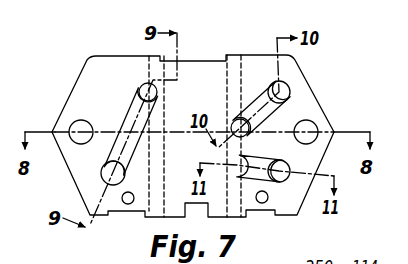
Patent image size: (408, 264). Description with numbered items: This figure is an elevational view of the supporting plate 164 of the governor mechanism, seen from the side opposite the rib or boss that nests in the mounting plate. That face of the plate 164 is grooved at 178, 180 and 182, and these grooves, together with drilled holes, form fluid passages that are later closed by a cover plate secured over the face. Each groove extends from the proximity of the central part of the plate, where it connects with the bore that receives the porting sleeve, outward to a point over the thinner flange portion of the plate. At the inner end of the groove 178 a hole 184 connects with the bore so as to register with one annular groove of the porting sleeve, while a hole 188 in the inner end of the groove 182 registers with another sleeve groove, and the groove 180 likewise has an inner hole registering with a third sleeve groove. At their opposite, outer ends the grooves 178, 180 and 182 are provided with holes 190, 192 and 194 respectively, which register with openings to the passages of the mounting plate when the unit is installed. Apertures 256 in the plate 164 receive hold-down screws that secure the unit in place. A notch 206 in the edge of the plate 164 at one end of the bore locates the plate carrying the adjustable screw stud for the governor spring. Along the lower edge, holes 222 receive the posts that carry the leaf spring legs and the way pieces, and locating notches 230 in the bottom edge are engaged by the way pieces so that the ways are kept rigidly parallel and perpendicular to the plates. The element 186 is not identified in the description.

The plate 164 is at (88, 72).
The groove 178 is at (132, 107).
The hole 184 is at (143, 82).
The hole 190 is at (108, 175).
The hole 194 is at (284, 86).
The hole 188 is at (235, 121).
The groove 182 is at (277, 113).
The groove 180 is at (260, 158).
The lower edge of lower slot 186 is at (242, 177).
The hole 192 is at (288, 173).
The apertures 256 is at (75, 126).
The holes 222 is at (127, 204).
The locating notches 230 is at (262, 213).
The notch 206 is at (209, 60).